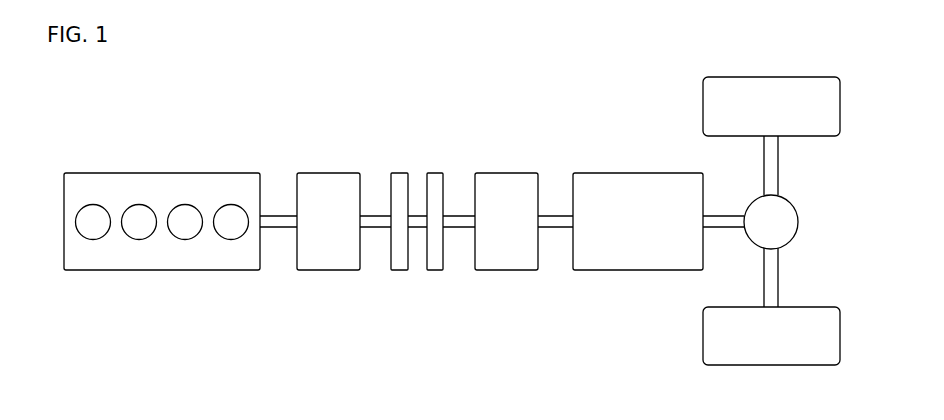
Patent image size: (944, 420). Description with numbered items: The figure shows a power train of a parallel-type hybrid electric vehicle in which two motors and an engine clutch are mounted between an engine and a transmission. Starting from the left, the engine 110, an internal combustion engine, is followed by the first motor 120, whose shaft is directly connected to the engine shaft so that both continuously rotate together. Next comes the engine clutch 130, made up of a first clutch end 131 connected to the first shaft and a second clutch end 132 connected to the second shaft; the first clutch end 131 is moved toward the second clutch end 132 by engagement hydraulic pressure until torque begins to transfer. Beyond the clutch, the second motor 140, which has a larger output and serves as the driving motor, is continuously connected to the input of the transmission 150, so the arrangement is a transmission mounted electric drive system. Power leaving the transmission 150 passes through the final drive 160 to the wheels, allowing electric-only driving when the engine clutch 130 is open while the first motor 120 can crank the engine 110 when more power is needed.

The engine 110 is at (153, 173).
The first motor 120 is at (329, 173).
The engine clutch 130 is at (415, 282).
The first clutch end 131 is at (395, 270).
The second clutch end 132 is at (450, 257).
The second motor 140 is at (502, 173).
The transmission 150 is at (622, 173).
The final drive 160 is at (797, 205).